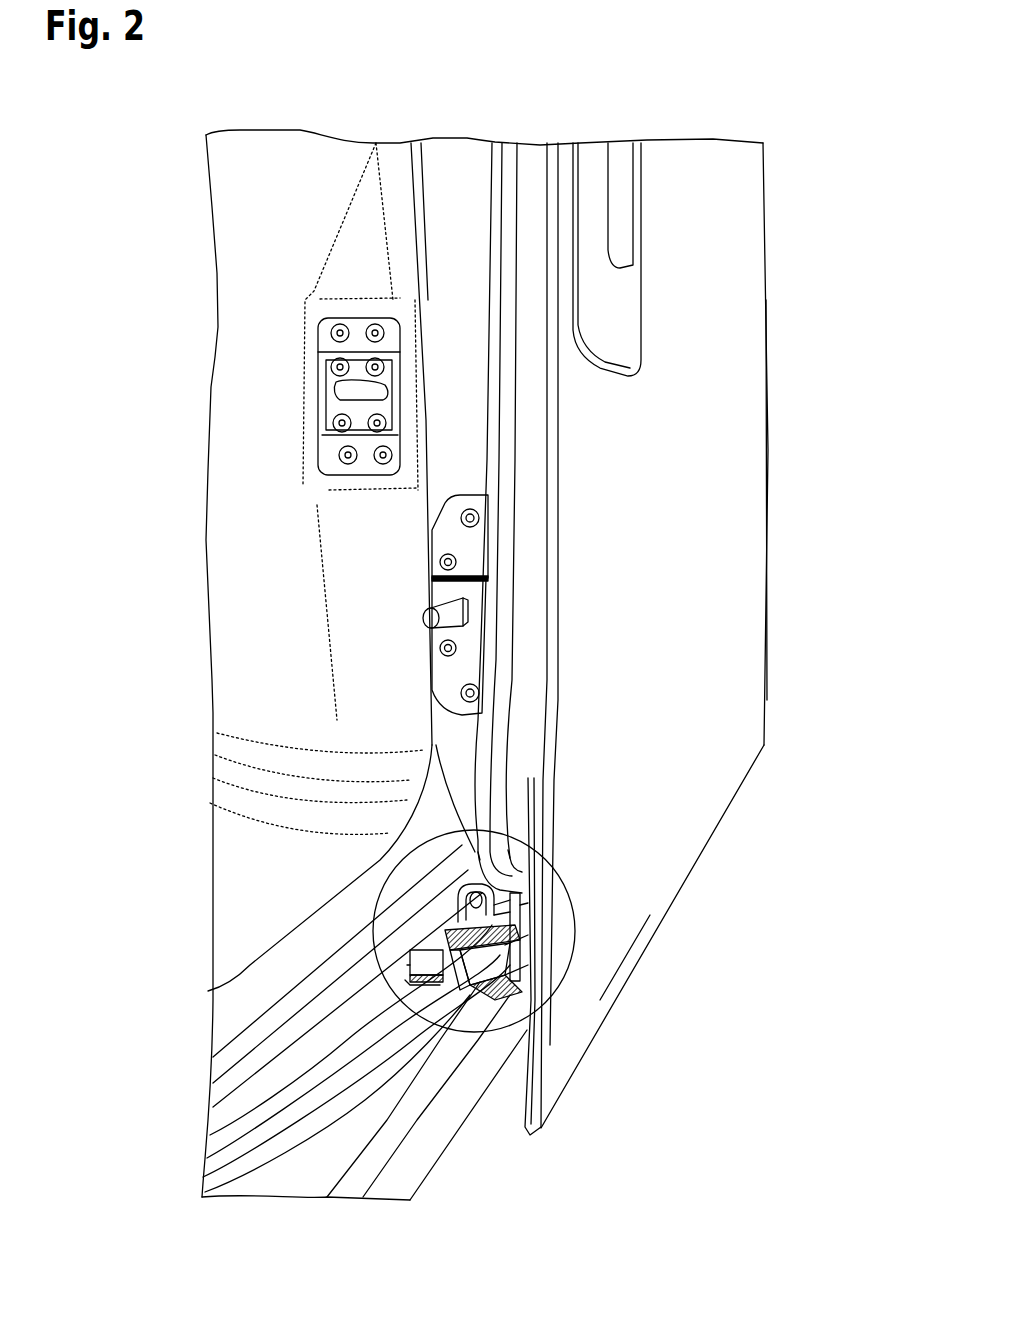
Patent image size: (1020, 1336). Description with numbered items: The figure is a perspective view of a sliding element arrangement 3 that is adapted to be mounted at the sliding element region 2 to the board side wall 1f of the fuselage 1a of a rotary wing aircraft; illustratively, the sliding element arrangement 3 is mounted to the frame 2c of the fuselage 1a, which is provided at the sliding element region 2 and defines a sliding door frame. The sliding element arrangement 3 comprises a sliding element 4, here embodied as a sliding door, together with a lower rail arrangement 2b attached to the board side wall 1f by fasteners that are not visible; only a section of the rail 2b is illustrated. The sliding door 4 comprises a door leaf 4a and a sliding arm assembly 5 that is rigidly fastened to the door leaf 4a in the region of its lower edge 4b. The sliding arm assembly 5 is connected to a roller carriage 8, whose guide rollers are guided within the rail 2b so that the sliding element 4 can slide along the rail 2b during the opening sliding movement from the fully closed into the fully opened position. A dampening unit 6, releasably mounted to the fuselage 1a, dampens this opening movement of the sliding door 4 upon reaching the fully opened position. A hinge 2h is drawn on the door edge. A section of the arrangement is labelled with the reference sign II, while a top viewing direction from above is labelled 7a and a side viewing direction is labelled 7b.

The sliding element region 2 is at (152, 184).
The frame 2c is at (271, 314).
The door hinge 2h is at (455, 605).
The lower rail arrangement 2b is at (258, 1024).
The sliding element 4 is at (712, 283).
The door leaf 4a is at (712, 503).
The lower edge 4b is at (525, 1055).
The sliding element arrangement 3 is at (639, 1001).
The top viewing direction 7a is at (517, 818).
The side viewing direction 7b is at (688, 973).
The section of the sliding element arrangement II is at (573, 915).
The dampening unit 6 is at (533, 900).
The sliding arm assembly 5 is at (525, 976).
The roller carriage 8 is at (448, 1010).
The fuselage 1a is at (390, 1187).
The board side wall 1f is at (452, 1126).